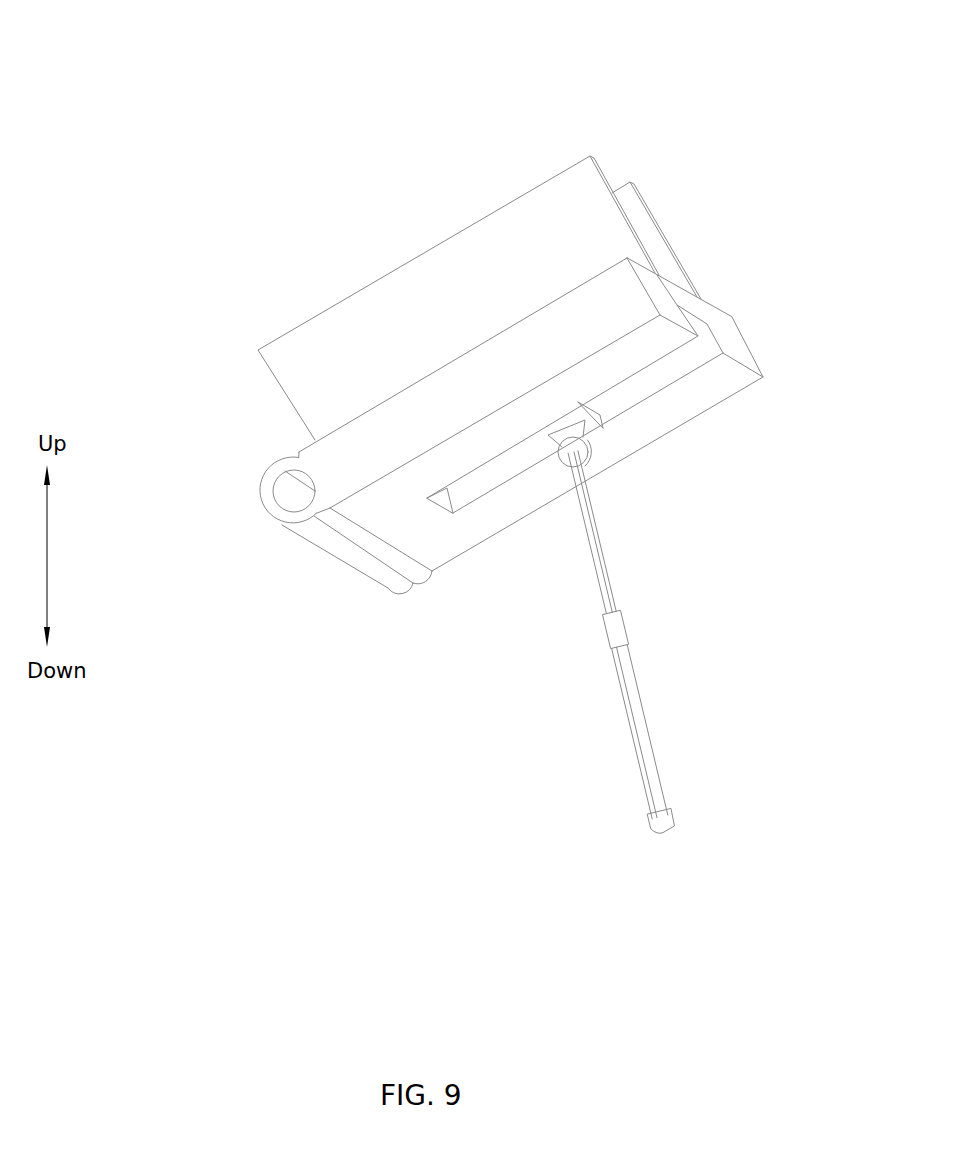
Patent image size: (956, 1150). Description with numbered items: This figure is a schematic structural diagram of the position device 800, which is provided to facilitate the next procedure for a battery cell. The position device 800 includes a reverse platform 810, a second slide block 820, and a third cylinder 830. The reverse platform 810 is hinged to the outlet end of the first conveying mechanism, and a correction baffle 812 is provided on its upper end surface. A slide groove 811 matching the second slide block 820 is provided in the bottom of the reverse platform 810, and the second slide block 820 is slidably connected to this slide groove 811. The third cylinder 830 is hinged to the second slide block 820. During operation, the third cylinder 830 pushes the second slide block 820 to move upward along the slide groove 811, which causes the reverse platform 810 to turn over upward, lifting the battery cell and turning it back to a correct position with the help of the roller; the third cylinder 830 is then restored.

The position device 800 is at (278, 68).
The reverse platform 810 is at (355, 457).
The slide groove 811 is at (677, 365).
The correction baffle 812 is at (378, 335).
The second slide block 820 is at (592, 440).
The third cylinder 830 is at (622, 637).